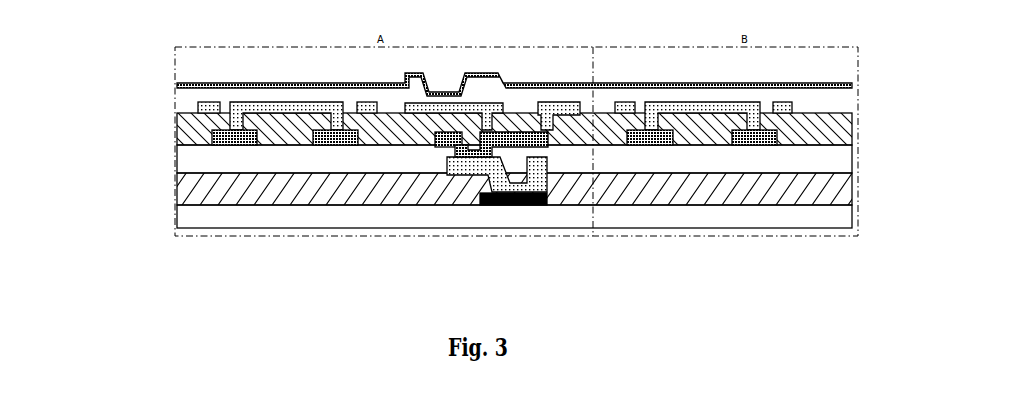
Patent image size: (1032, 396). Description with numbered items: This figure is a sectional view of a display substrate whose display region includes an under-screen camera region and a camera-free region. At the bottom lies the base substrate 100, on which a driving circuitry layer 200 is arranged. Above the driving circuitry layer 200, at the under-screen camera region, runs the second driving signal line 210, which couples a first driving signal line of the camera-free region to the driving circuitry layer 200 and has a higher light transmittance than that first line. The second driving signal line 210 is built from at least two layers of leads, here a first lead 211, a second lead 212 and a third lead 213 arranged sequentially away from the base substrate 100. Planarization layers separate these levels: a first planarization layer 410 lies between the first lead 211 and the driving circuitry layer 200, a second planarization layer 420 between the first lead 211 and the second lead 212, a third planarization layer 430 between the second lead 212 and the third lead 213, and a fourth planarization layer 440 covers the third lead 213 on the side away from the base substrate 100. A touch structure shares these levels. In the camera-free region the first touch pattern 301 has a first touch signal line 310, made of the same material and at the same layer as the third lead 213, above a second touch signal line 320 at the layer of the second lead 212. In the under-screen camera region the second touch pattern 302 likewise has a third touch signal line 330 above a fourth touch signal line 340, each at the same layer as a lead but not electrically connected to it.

The base substrate 100 is at (476, 228).
The driving circuitry layer 200 is at (535, 207).
The second driving signal line 210 is at (468, 207).
The first lead 211 is at (453, 176).
The second lead 212 is at (435, 140).
The third lead 213 is at (403, 110).
The first touch pattern 301 is at (776, 125).
The second touch pattern 302 is at (197, 105).
The first touch signal line 310 is at (795, 102).
The second touch signal line 320 is at (787, 140).
The third touch signal line 330 is at (195, 102).
The fourth touch signal line 340 is at (177, 138).
The first planarization layer 410 is at (177, 192).
The second planarization layer 420 is at (177, 158).
The third planarization layer 430 is at (195, 113).
The fourth planarization layer 440 is at (200, 91).